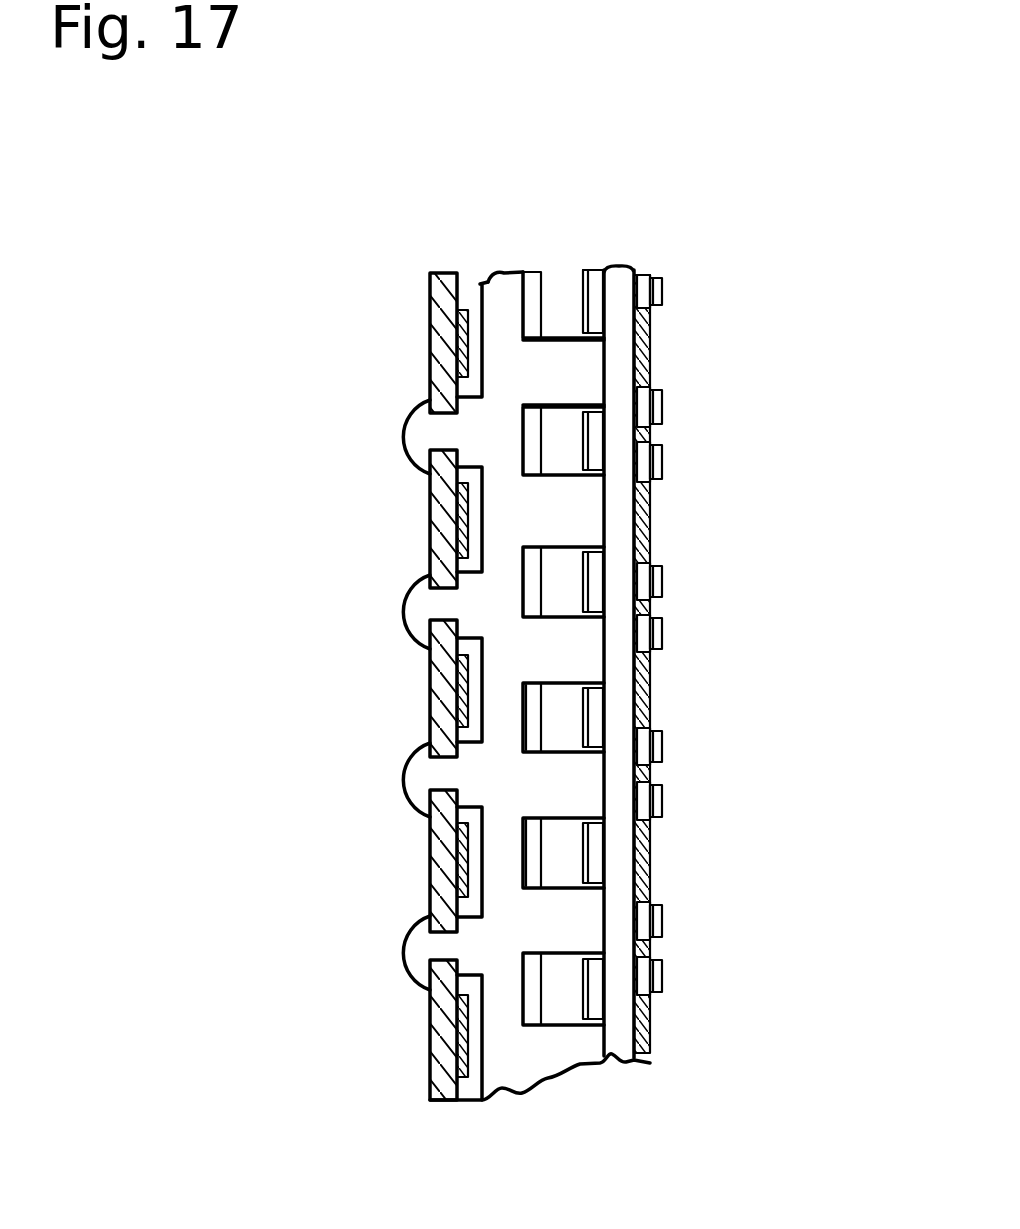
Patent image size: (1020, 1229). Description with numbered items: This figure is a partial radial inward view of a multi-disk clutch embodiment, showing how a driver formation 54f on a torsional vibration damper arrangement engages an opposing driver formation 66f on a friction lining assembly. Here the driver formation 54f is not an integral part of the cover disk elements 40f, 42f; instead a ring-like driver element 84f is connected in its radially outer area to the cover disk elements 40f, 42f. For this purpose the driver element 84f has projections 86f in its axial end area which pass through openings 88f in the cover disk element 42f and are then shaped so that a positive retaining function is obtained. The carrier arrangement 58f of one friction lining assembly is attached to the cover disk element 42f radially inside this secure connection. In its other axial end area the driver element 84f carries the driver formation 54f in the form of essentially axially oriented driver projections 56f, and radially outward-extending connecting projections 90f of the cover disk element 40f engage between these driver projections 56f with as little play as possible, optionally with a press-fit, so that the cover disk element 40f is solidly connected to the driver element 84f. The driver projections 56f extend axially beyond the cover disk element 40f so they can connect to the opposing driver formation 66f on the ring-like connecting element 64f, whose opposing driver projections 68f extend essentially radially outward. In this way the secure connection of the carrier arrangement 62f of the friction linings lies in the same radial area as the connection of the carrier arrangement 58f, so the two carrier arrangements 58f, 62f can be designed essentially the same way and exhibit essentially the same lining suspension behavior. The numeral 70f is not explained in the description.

The opposing driver formation 66f is at (698, 264).
The driver formation 54f is at (553, 283).
The ring-like driver element 84f is at (503, 272).
The driver projections 56f is at (565, 375).
The opposing driver projections 68f is at (590, 440).
The carrier arrangement 62f is at (650, 518).
The cavity 70f is at (590, 680).
The connecting element 64f is at (620, 697).
The connecting projections 90f is at (530, 832).
The cover disk element 40f is at (540, 848).
The carrier arrangement 58f is at (428, 515).
The cover disk element 42f is at (430, 857).
The projections 86f is at (442, 437).
The openings 88f is at (440, 418).